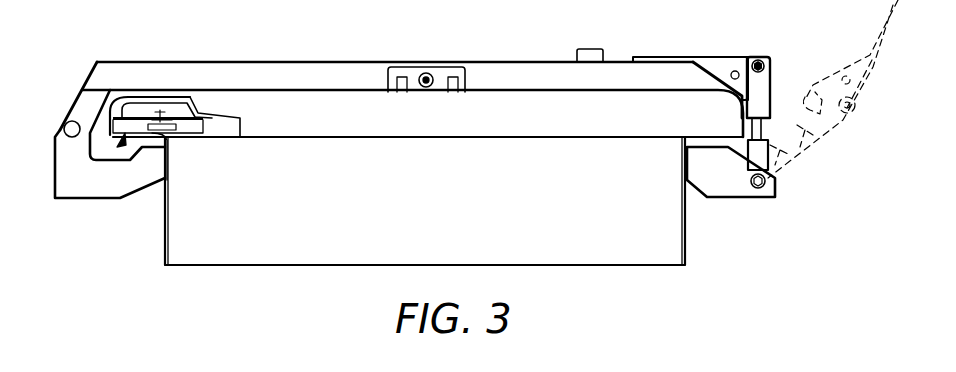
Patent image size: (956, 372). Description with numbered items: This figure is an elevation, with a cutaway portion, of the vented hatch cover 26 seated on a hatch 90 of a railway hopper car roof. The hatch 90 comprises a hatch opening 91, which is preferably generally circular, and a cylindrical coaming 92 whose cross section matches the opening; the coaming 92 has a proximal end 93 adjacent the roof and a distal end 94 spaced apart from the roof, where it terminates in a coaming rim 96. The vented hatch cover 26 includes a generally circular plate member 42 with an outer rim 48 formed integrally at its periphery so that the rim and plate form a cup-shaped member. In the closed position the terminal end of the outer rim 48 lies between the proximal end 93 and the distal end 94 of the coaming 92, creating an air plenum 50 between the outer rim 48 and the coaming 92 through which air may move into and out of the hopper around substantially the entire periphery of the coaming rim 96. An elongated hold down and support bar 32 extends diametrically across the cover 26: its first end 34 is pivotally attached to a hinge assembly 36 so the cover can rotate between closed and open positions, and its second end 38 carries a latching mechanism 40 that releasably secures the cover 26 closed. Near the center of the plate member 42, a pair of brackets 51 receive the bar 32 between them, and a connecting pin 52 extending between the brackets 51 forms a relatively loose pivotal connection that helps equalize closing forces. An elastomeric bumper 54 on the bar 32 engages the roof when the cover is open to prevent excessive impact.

The vented hatch cover 26 is at (442, 129).
The hold down and support bar 32 is at (218, 61).
The first end 34 is at (82, 97).
The hinge assembly 36 is at (55, 175).
The second end 38 is at (698, 77).
The latching mechanism 40 is at (760, 80).
The circular plate member 42 is at (150, 97).
The outer rim 48 is at (108, 128).
The air plenum 50 is at (121, 146).
The brackets 51 is at (450, 70).
The connecting pin 52 is at (425, 72).
The elastomeric bumper 54 is at (595, 48).
The hatch 90 is at (440, 206).
The hatch opening 91 is at (628, 267).
The coaming 92 is at (165, 235).
The proximal end 93 is at (165, 267).
The distal end 94 is at (172, 133).
The coaming rim 96 is at (155, 140).